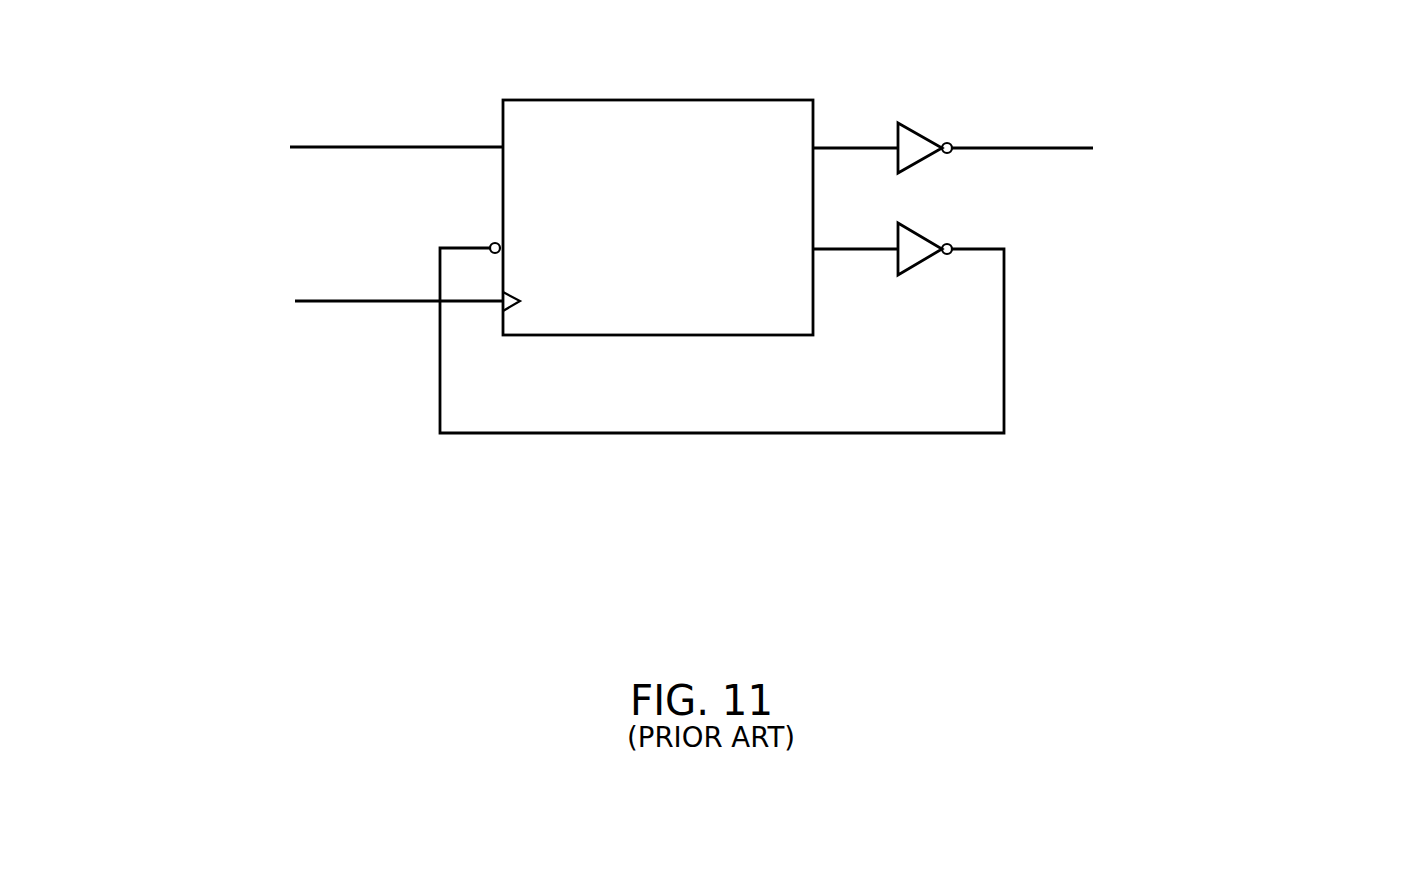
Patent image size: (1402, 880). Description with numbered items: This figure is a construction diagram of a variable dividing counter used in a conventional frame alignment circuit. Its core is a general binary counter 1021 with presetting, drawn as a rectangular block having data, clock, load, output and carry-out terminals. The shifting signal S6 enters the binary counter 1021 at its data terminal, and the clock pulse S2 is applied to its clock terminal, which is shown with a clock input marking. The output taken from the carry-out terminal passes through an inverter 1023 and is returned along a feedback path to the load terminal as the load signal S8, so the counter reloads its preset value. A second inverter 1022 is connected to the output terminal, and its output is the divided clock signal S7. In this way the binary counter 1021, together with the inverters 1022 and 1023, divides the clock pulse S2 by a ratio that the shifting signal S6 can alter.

The binary counter 1021 is at (795, 99).
The inverter 1022 is at (905, 121).
The inverter 1023 is at (921, 219).
The shifting signal S6 is at (390, 144).
The clock pulse S2 is at (386, 298).
The divided clock signal S7 is at (1058, 146).
The load signal S8 is at (850, 432).